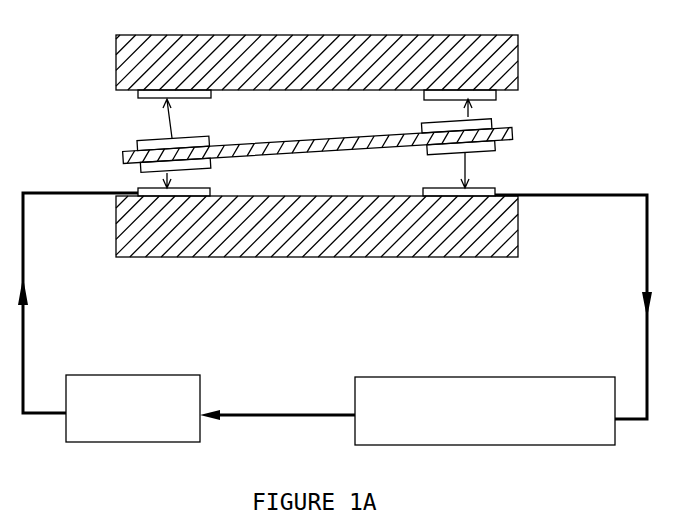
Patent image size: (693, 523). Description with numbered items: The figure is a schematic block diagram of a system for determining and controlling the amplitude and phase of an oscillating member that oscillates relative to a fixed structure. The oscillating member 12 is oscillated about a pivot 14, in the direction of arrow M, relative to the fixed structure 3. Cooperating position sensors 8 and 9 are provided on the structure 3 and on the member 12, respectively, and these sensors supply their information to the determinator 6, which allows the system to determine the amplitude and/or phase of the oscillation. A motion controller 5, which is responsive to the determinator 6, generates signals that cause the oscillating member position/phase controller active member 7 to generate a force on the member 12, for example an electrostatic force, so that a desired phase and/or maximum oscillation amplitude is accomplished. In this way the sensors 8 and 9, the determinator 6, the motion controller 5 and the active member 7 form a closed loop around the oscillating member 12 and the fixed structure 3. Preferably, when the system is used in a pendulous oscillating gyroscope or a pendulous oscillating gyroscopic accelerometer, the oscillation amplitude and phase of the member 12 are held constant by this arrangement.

The fixed structure 3 is at (522, 35).
The motion controller 5 is at (157, 370).
The determinator 6 is at (518, 375).
The oscillating member position/phase controller active member 7 is at (210, 166).
The position sensor 8 is at (483, 187).
The position sensor 9 is at (498, 148).
The oscillating member 12 is at (510, 128).
The pivot 14 is at (322, 147).
The arrow M is at (173, 123).